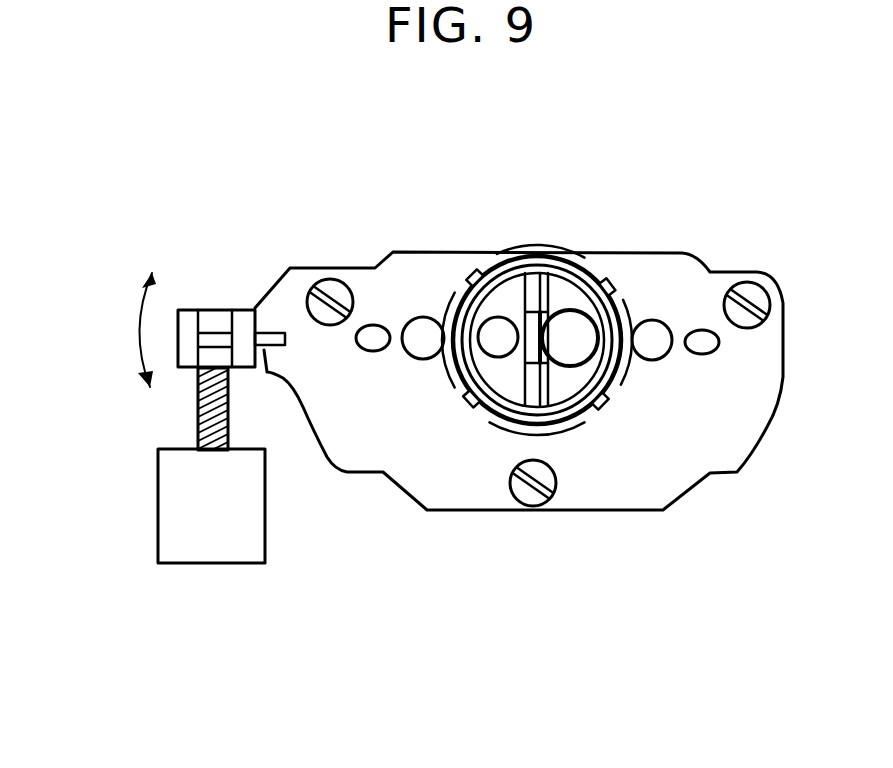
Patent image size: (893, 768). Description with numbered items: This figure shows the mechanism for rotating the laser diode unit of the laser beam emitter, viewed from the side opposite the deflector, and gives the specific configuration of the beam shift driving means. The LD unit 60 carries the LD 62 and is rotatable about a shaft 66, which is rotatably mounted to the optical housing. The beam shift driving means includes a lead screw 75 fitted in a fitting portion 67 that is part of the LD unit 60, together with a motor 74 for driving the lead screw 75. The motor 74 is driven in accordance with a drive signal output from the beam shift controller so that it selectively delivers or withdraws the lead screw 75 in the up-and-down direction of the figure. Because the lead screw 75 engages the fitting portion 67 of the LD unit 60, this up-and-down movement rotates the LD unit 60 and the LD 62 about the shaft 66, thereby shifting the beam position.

The LD unit 60 is at (733, 250).
The LD 62 is at (568, 330).
The shaft 66 is at (540, 327).
The fitting portion 67 is at (238, 323).
The motor 74 is at (158, 507).
The lead screw 75 is at (188, 408).